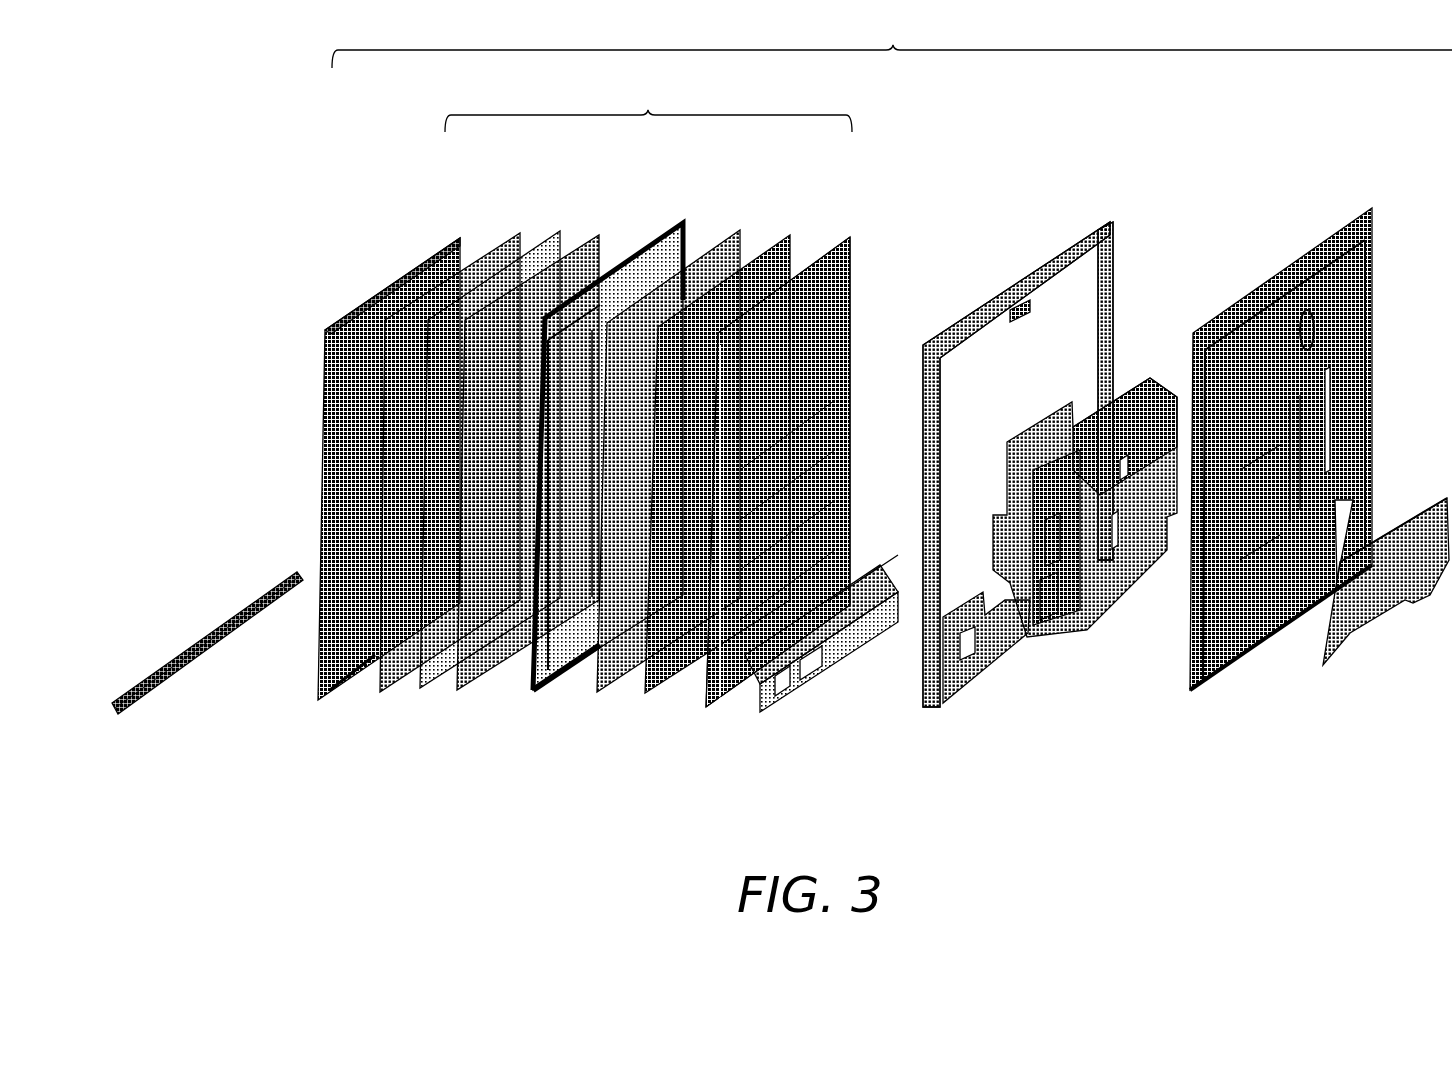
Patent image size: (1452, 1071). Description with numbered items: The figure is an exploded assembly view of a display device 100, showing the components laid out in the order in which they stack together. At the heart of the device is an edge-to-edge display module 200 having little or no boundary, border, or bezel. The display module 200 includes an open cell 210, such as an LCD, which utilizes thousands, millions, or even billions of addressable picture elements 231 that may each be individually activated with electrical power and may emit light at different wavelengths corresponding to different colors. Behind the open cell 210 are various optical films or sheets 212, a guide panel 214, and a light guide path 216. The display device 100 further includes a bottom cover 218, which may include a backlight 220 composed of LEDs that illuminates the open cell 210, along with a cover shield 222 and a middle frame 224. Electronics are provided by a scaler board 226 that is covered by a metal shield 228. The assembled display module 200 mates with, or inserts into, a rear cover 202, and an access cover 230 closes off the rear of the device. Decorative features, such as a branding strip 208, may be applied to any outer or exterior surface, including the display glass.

The display device 100 is at (893, 50).
The display module 200 is at (648, 115).
The rear cover 202 is at (1372, 208).
The branding strip 208 is at (128, 712).
The open cell 210 is at (325, 706).
The optical films or sheets 212 is at (603, 222).
The guide panel 214 is at (679, 218).
The light guide path 216 is at (598, 696).
The bottom cover 218 is at (852, 238).
The backlight 220 is at (828, 460).
The cover shield 222 is at (765, 708).
The middle frame 224 is at (1108, 222).
The scaler board 226 is at (1012, 572).
The metal shield 228 is at (1070, 620).
The access cover 230 is at (1325, 666).
The picture elements 231 is at (341, 323).